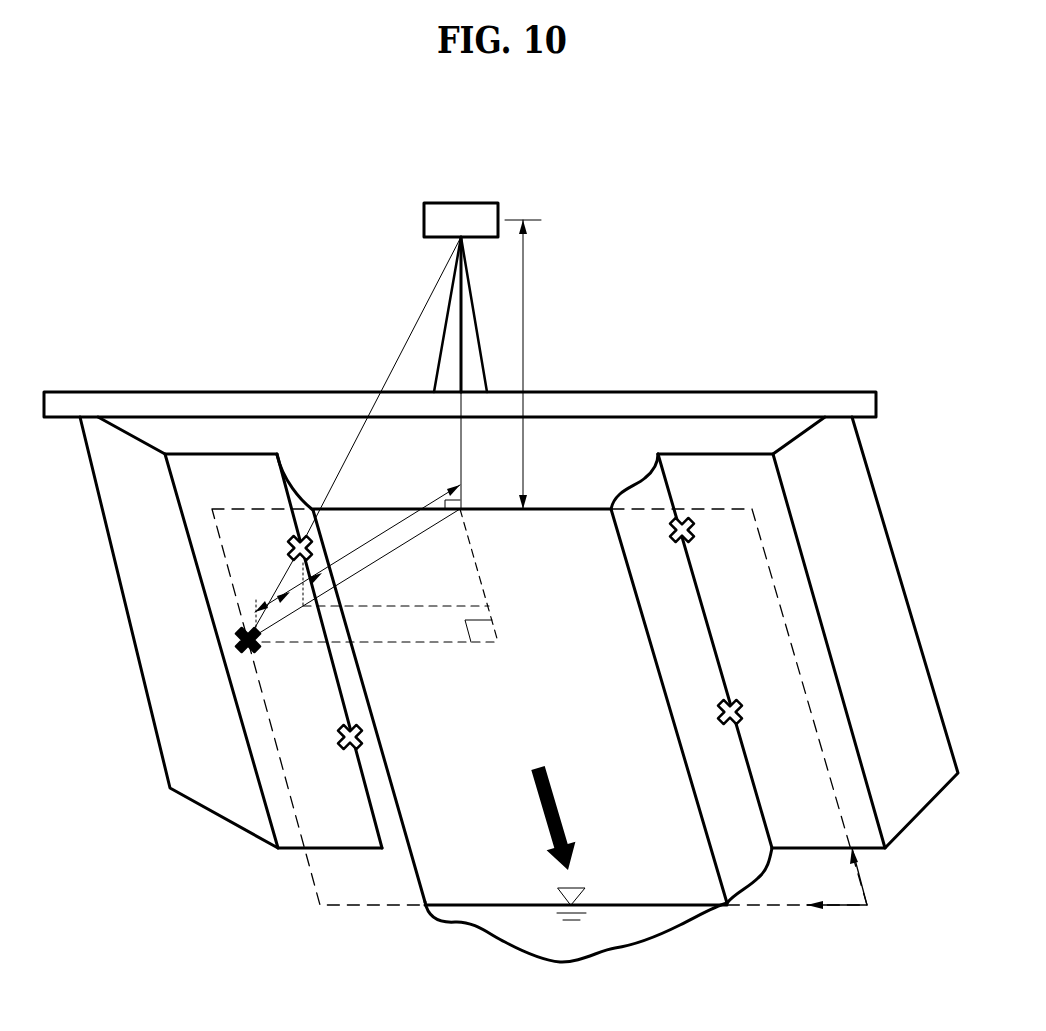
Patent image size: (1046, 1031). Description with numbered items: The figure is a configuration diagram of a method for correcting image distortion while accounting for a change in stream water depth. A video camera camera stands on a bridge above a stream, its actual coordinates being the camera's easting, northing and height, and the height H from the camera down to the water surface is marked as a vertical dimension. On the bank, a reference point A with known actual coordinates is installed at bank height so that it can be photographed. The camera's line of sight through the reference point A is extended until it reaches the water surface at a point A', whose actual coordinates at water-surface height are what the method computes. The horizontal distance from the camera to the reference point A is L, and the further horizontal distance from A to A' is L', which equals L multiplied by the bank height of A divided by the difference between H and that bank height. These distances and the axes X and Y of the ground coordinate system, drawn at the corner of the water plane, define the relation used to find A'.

The element camera is at (478, 331).
The height from the camera to the water surface H is at (529, 364).
The horizontal distance from the camera to the reference point L is at (357, 548).
The additional horizontal distance to the water-surface point L' is at (265, 586).
The reference point on the bank A is at (231, 548).
The point at the same height as the water surface A' is at (164, 640).
The X axis X is at (875, 876).
The Y axis Y is at (837, 922).